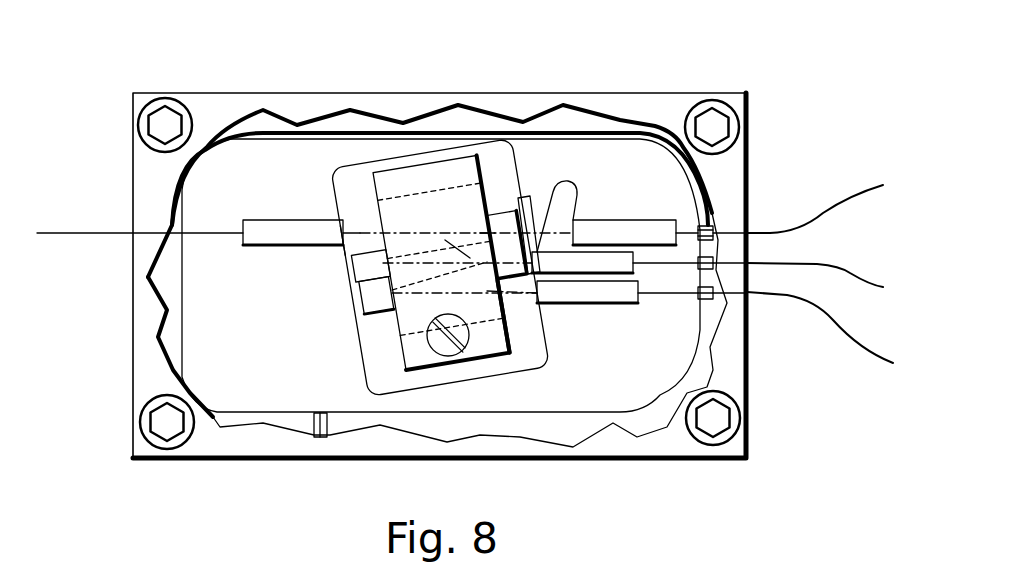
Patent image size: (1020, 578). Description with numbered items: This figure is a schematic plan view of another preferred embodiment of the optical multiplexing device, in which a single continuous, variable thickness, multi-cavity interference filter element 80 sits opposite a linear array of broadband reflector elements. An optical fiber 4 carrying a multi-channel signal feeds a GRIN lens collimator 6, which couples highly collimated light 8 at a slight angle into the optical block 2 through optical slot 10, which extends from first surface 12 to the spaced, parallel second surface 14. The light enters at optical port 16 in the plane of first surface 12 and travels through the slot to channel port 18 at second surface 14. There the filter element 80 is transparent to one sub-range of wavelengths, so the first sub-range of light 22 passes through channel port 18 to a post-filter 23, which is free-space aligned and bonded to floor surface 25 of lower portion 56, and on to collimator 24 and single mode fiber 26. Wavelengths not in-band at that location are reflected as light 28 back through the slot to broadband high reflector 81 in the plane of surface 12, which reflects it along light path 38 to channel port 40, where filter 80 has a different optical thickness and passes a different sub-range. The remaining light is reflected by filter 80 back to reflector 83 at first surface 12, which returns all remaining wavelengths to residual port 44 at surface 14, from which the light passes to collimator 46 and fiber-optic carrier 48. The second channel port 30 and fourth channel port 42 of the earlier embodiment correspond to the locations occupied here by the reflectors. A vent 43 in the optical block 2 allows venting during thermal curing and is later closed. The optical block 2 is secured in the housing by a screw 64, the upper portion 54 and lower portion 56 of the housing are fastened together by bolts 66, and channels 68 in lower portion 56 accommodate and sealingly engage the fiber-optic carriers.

The optical block 2 is at (397, 162).
The optical fiber 4 is at (55, 232).
The GRIN lens collimator 6 is at (258, 220).
The collimated light 8 is at (353, 225).
The optical slot 10 is at (479, 183).
The first surface 12 is at (373, 182).
The second surface 14 is at (480, 157).
The optical port 16 is at (357, 228).
The channel port 18 is at (487, 230).
The light 22 is at (540, 235).
The post-filter 23 is at (533, 203).
The collimator 24 is at (637, 230).
The floor surface 25 is at (629, 201).
The single mode fiber 26 is at (767, 230).
The reflected light 28 is at (430, 254).
The second channel port 30 is at (387, 255).
The light path 38 is at (445, 240).
The third channel port 40 is at (487, 291).
The fourth channel port 42 is at (403, 310).
The vent 43 is at (320, 418).
The residual port 44 is at (500, 292).
The collimator 46 is at (613, 298).
The fiber-optic carrier 48 is at (797, 298).
The upper portion 54 is at (660, 447).
The lower portion 56 is at (604, 395).
The screw 64 is at (465, 337).
The bolts 66 is at (714, 127).
The channels 68 is at (713, 220).
The variable thickness multi-cavity interference filter element 80 is at (495, 210).
The broadband high reflector 81 is at (358, 262).
The reflector 83 is at (367, 307).